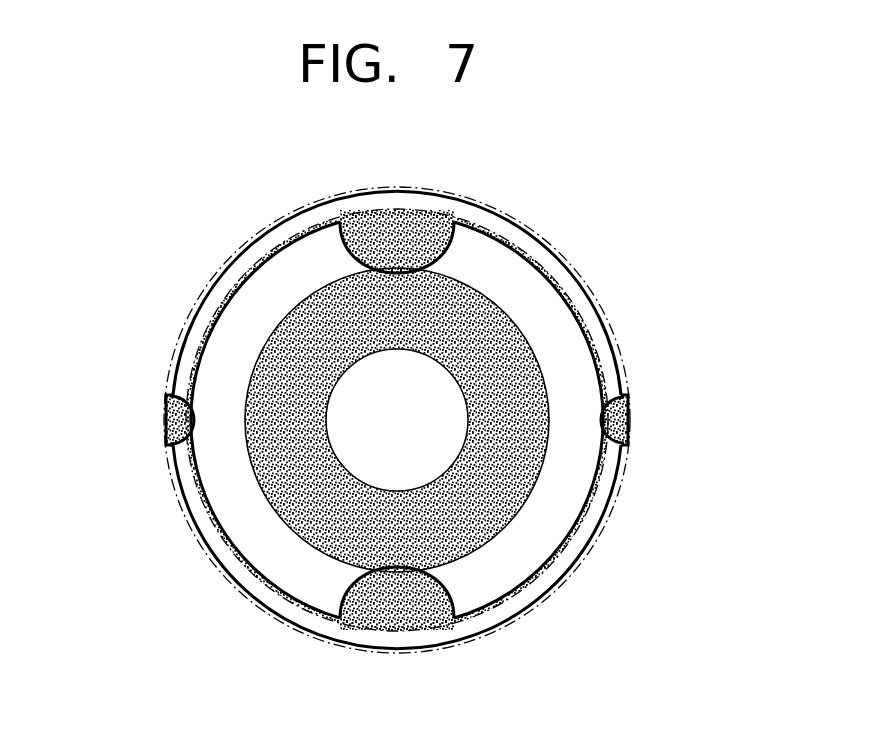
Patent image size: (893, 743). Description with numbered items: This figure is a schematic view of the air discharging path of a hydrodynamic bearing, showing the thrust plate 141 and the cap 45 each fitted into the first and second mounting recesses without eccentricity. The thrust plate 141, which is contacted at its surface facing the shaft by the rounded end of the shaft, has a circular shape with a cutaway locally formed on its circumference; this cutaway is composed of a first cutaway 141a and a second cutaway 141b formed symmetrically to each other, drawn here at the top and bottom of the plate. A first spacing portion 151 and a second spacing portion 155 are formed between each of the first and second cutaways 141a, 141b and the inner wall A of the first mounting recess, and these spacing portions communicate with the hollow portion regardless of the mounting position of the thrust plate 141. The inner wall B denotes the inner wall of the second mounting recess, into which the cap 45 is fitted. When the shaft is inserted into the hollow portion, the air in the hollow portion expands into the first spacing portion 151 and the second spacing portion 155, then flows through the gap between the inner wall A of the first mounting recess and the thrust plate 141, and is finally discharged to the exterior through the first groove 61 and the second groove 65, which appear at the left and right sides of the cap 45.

The cap 45 is at (231, 566).
The first groove 61 is at (172, 422).
The second groove 65 is at (618, 422).
The thrust plate 141 is at (546, 317).
The first cutaway 141a is at (436, 237).
The second cutaway 141b is at (438, 587).
The first spacing portion 151 is at (374, 238).
The second spacing portion 155 is at (373, 606).
The inner wall of the first mounting recess A is at (593, 338).
The inner wall of the second mounting recess B is at (629, 378).